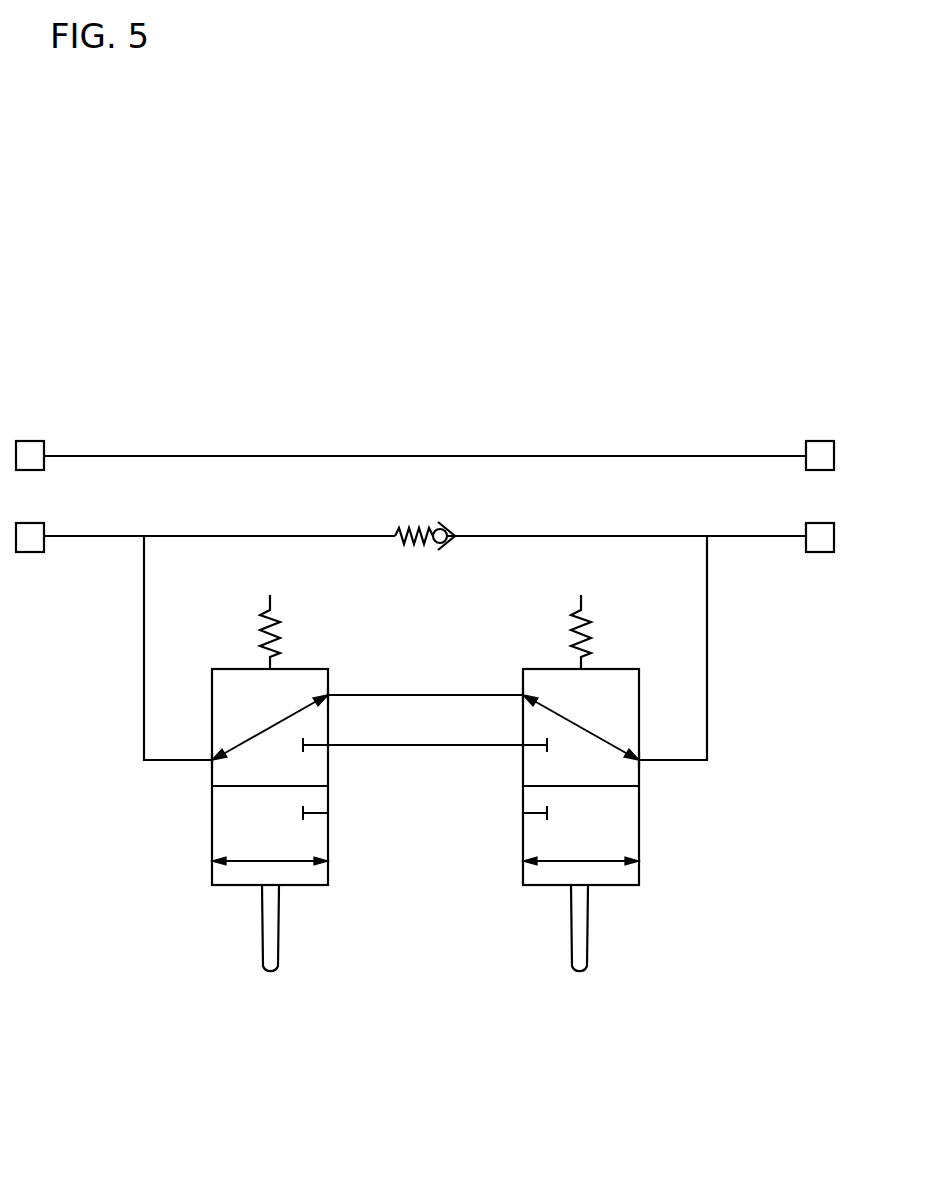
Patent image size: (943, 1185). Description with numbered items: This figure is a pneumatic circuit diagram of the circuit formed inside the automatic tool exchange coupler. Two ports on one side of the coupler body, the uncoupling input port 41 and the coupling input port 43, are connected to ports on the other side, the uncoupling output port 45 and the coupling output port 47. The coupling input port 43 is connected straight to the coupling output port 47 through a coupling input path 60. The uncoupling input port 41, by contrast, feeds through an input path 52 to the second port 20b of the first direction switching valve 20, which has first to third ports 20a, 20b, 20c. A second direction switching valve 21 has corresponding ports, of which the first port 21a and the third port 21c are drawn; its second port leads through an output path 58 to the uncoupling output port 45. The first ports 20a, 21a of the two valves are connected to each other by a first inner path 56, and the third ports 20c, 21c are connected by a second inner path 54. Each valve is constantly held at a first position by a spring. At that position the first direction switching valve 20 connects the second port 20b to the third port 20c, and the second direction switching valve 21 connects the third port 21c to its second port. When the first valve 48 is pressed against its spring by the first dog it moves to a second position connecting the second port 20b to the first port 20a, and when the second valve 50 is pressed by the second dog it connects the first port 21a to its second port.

The first direction switching valve 20 is at (228, 669).
The first port 20a is at (328, 745).
The second port 20b is at (212, 760).
The third port 20c is at (328, 695).
The second direction switching valve 21 is at (548, 669).
The first port 21a is at (523, 745).
The third port 21c is at (523, 695).
The uncoupling input port 41 is at (33, 546).
The coupling input port 43 is at (28, 450).
The uncoupling output port 45 is at (820, 532).
The coupling output port 47 is at (821, 450).
The first valve 48 is at (270, 948).
The second valve 50 is at (580, 948).
The input path 52 is at (144, 648).
The second inner path 54 is at (407, 693).
The first inner path 56 is at (448, 745).
The output path 58 is at (707, 652).
The coupling input path 60 is at (465, 457).